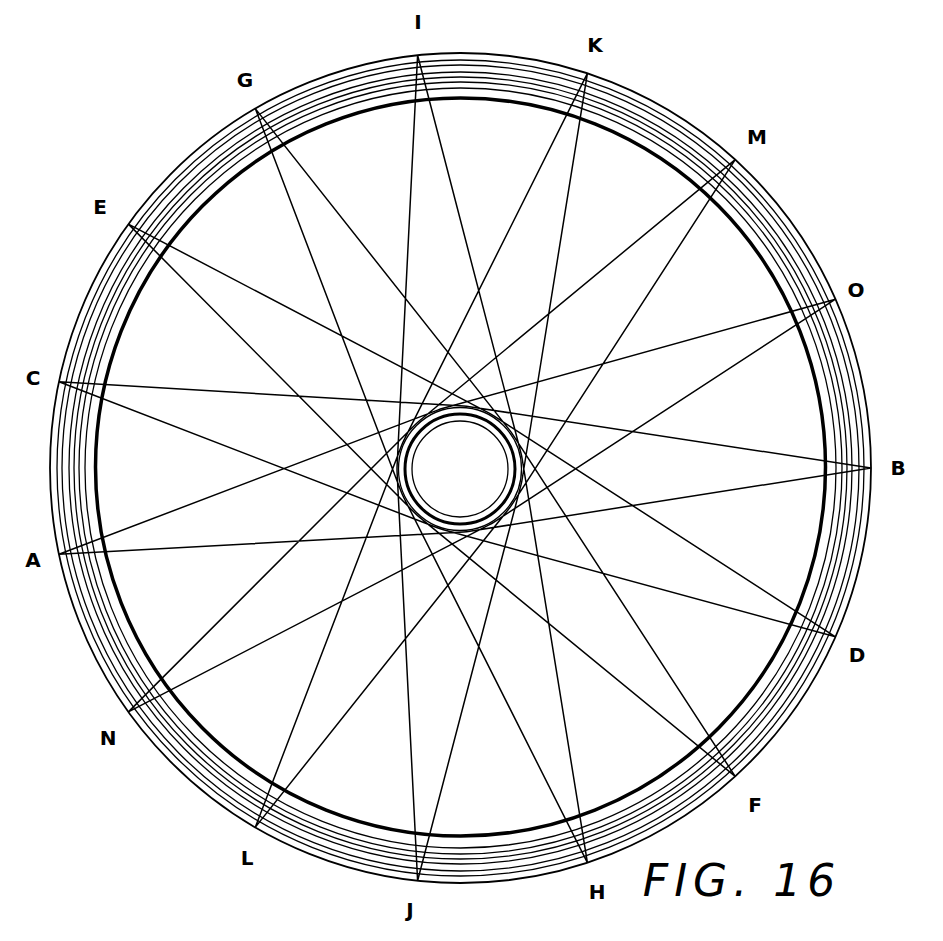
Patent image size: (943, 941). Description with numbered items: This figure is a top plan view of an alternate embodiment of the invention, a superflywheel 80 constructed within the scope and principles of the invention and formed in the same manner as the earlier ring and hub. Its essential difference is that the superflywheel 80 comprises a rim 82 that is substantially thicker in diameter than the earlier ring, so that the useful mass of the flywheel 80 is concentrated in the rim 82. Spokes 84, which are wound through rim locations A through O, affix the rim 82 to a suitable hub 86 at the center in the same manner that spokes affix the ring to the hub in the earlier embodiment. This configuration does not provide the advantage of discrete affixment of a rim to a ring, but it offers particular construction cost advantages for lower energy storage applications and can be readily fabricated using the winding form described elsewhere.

The superflywheel 80 is at (460, 468).
The rim 82 is at (208, 152).
The spokes 84 is at (205, 262).
The hub 86 is at (521, 412).